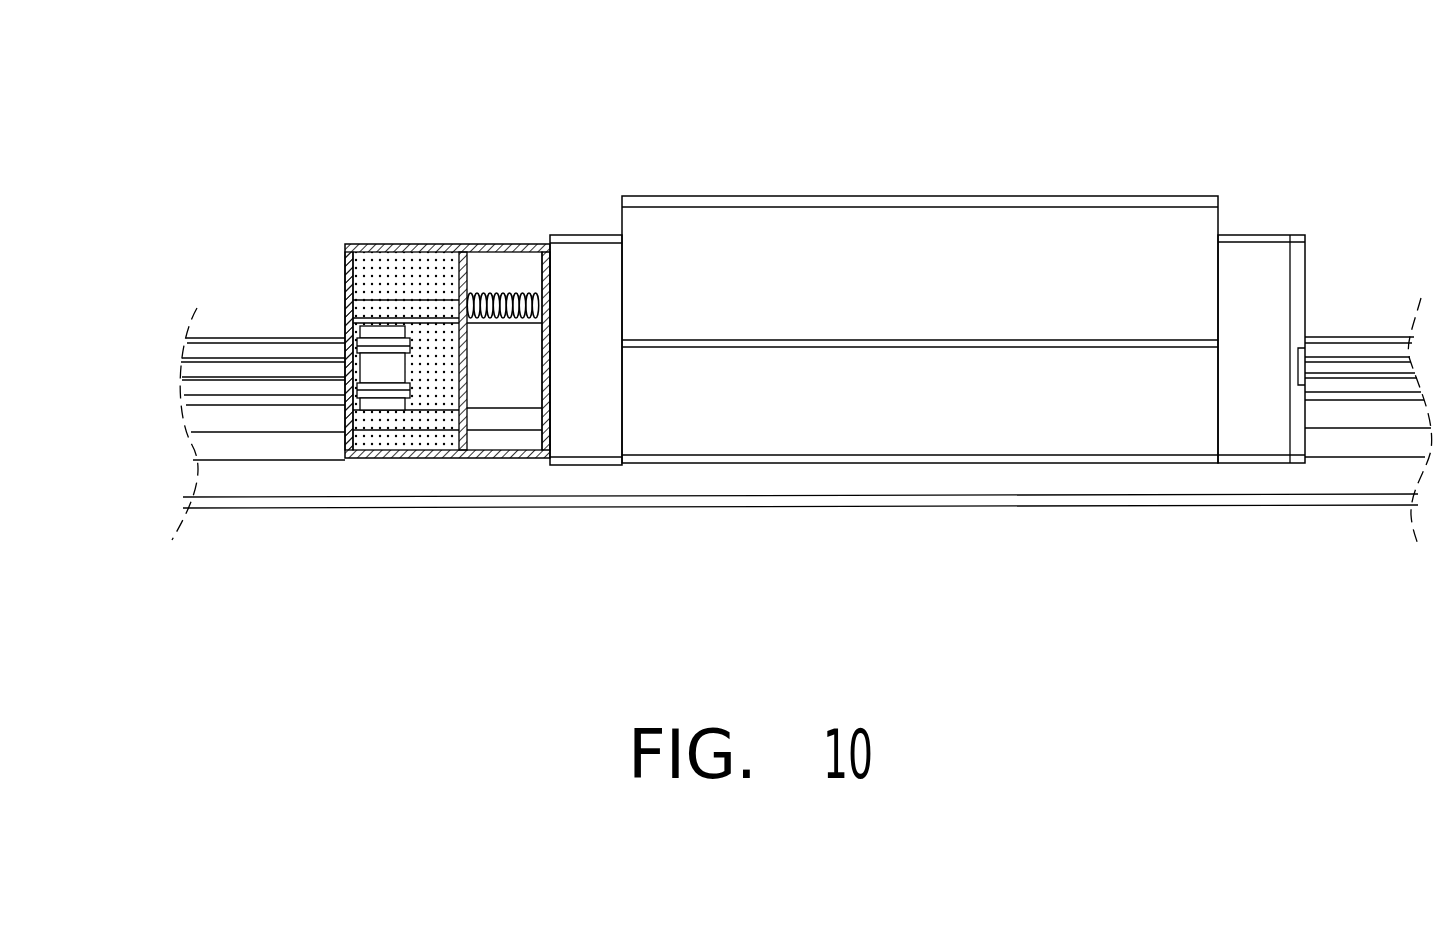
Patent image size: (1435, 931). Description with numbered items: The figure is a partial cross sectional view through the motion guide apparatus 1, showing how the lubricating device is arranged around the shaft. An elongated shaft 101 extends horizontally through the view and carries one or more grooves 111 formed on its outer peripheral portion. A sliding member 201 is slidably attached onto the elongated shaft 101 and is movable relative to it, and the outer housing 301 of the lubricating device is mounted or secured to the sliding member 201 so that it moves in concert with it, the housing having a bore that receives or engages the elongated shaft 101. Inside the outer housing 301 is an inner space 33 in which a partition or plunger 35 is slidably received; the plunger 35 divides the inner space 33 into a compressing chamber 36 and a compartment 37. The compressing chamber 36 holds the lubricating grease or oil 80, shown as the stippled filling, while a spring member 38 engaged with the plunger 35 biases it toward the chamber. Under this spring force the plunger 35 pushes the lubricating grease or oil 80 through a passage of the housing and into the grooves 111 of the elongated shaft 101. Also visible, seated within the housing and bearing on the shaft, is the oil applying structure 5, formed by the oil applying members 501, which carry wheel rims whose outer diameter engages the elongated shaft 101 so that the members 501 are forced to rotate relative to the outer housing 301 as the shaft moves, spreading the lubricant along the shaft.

The motion guide apparatus 1 is at (935, 240).
The oil applying member assembly 5 is at (318, 412).
The oil applying members 501 is at (377, 368).
The inner space 33 is at (392, 303).
The partition or plunger 35 is at (467, 247).
The compressing chamber 36 is at (368, 262).
The compartment 37 is at (512, 257).
The spring member 38 is at (527, 293).
The lubricating grease or oil 80 is at (401, 260).
The elongated shaft 101 is at (233, 352).
The grooves 111 is at (233, 380).
The sliding member 201 is at (919, 218).
The outer housing 301 is at (343, 268).